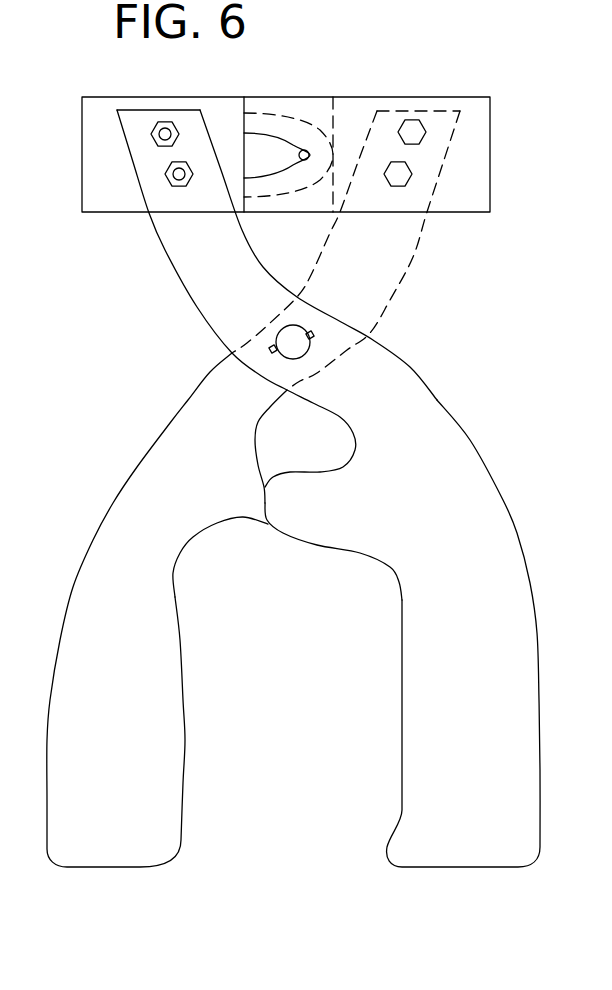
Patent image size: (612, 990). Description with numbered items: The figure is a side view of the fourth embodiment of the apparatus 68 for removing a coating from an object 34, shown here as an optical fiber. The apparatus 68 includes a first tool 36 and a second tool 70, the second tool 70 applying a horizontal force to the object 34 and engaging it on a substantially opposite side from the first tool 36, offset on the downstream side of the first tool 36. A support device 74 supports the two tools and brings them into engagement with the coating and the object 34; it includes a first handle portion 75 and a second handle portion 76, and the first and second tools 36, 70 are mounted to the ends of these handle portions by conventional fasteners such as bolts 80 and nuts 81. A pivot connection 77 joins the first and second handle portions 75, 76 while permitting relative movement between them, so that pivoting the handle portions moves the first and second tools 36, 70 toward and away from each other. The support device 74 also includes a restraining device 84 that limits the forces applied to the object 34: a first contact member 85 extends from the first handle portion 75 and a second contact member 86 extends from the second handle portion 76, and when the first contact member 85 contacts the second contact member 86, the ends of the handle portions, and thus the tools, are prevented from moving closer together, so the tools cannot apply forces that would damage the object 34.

The apparatus 68 is at (392, 56).
The second tool 70 is at (98, 118).
The first tool 36 is at (472, 160).
The object 34 is at (298, 157).
The nuts 81 is at (157, 135).
The bolts 80 is at (422, 142).
The support device 74 is at (473, 375).
The pivot connection 77 is at (286, 339).
The first handle portion 75 is at (157, 468).
The second handle portion 76 is at (507, 597).
The restraining device 84 is at (278, 596).
The first contact member 85 is at (218, 512).
The second contact member 86 is at (330, 528).